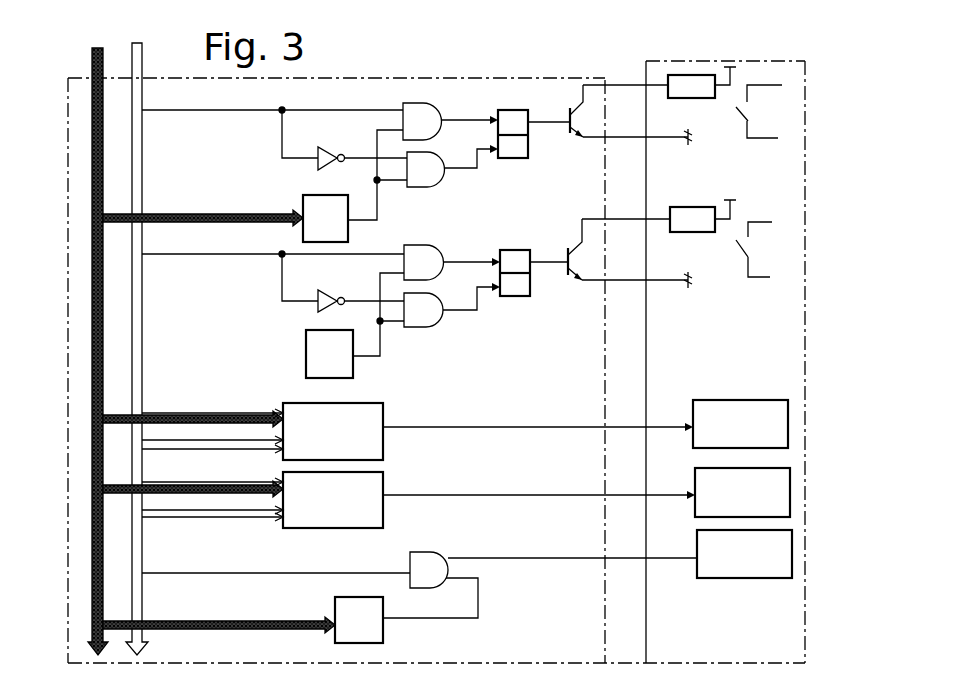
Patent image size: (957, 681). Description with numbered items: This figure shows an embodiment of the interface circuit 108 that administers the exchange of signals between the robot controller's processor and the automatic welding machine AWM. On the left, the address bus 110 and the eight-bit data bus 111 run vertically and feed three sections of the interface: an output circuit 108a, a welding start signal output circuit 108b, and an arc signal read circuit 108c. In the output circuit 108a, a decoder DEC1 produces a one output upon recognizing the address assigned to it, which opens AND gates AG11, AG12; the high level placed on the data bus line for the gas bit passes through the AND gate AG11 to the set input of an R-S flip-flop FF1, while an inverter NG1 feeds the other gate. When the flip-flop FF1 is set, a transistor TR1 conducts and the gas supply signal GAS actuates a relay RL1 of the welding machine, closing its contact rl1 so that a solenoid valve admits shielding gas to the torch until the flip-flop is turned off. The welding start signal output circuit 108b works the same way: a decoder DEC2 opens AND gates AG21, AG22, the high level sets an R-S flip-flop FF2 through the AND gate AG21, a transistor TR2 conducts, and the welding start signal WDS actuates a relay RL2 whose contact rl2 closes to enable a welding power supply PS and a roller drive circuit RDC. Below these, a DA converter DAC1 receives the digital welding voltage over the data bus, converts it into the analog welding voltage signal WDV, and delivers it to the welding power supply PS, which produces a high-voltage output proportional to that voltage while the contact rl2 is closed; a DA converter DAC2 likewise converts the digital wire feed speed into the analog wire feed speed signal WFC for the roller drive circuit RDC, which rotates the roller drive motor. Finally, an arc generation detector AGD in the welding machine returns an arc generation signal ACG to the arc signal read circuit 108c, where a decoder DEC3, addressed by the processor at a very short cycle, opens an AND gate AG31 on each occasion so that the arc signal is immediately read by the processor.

The interface circuit 108 is at (510, 77).
The output circuit 108a is at (447, 184).
The welding start signal output circuit 108b is at (445, 333).
The arc signal read circuit 108c is at (485, 615).
The address bus 110 is at (92, 62).
The data bus 111 is at (132, 48).
The inverter NG1 is at (345, 133).
The decoder DEC1 is at (313, 198).
The decoder DEC2 is at (348, 367).
The decoder DEC3 is at (310, 602).
The AND gate AG11 is at (427, 104).
The AND gate AG12 is at (430, 153).
The AND gate AG21 is at (441, 253).
The AND gate AG22 is at (430, 297).
The AND gate AG31 is at (412, 567).
The R-S flip-flop FF1 is at (508, 110).
The R-S flip-flop FF2 is at (518, 296).
The transistor TR1 is at (566, 133).
The transistor TR2 is at (566, 272).
The relay RL1 is at (690, 98).
The relay RL2 is at (692, 207).
The relay contact rl1 is at (759, 111).
The relay contact rl2 is at (757, 249).
The gas supply signal GAS is at (625, 71).
The welding start signal WDS is at (626, 207).
The DA converter DAC1 is at (383, 440).
The DA converter DAC2 is at (383, 515).
The welding voltage signal WDV is at (538, 417).
The wire feed speed signal WFC is at (539, 487).
The arc generation signal ACG is at (572, 547).
The welding power supply PS is at (732, 405).
The roller drive circuit RDC is at (580, 527).
The arc generation detector AGD is at (705, 567).
The automatic welding machine AWM is at (739, 650).